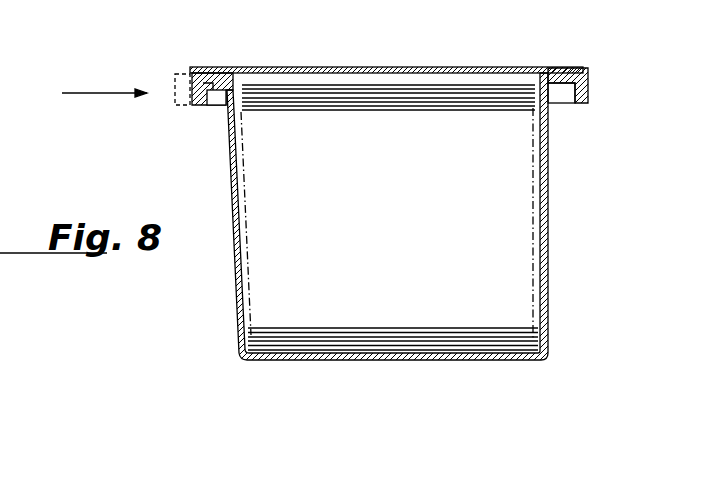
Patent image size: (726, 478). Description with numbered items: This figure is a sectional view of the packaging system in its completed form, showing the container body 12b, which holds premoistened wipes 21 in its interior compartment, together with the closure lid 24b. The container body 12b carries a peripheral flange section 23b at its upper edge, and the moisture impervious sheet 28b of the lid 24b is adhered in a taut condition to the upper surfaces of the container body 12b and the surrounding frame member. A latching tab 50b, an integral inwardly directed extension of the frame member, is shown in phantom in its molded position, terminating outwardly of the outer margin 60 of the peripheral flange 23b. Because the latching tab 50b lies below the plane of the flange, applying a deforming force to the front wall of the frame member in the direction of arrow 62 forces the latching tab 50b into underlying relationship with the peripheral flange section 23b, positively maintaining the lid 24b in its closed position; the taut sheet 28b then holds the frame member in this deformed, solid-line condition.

The container body 12b is at (238, 281).
The premoistened wipes 21 is at (495, 110).
The moisture impervious sheet 28b is at (340, 68).
The peripheral flange section 23b is at (205, 78).
The latching tab 50b is at (208, 110).
The outer margin 60 is at (192, 73).
The lid 24b is at (590, 73).
The arrow 62 is at (88, 92).